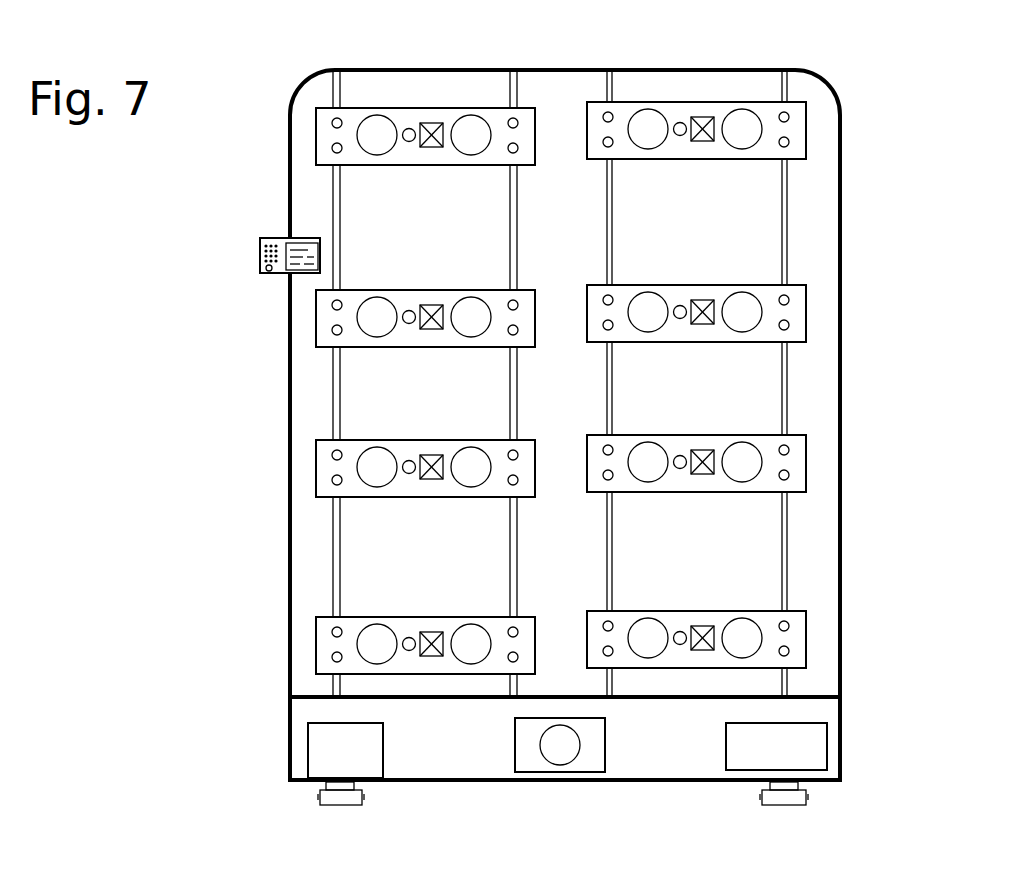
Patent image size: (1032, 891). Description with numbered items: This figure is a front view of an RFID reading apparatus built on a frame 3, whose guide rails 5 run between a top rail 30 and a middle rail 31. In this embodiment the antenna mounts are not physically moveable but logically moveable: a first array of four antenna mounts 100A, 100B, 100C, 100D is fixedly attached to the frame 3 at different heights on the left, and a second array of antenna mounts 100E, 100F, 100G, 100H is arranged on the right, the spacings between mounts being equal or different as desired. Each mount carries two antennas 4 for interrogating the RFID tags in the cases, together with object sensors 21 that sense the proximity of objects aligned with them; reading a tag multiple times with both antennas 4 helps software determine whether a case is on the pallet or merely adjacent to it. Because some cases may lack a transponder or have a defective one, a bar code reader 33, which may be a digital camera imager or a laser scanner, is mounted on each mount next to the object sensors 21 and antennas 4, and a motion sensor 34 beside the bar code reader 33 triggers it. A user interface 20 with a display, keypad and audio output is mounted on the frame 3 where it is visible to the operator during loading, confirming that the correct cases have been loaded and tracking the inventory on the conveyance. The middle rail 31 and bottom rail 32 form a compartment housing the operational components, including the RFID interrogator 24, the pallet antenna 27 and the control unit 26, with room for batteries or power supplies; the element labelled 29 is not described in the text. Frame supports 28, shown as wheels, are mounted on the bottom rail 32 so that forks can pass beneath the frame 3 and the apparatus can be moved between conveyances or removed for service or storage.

The frame 3 is at (840, 320).
The antennas 4 is at (468, 147).
The guide rails 5 is at (332, 213).
The user interface 20 is at (259, 264).
The object sensors 21 is at (332, 125).
The RFID interrogator 24 is at (345, 759).
The control unit 26 is at (810, 749).
The pallet antenna 27 is at (562, 752).
The frame supports 28 is at (338, 798).
The base shelf 29 is at (315, 709).
The top rail 30 is at (590, 68).
The middle rail 31 is at (815, 694).
The bottom rail 32 is at (591, 778).
The bar code reader 33 is at (434, 122).
The motion sensor 34 is at (409, 122).
The antenna mount 100A is at (535, 617).
The antenna mount 100B is at (548, 428).
The antenna mount 100C is at (548, 275).
The antenna mount 100D is at (535, 108).
The antenna mount 100E is at (808, 641).
The antenna mount 100F is at (808, 462).
The antenna mount 100G is at (808, 304).
The antenna mount 100H is at (807, 102).